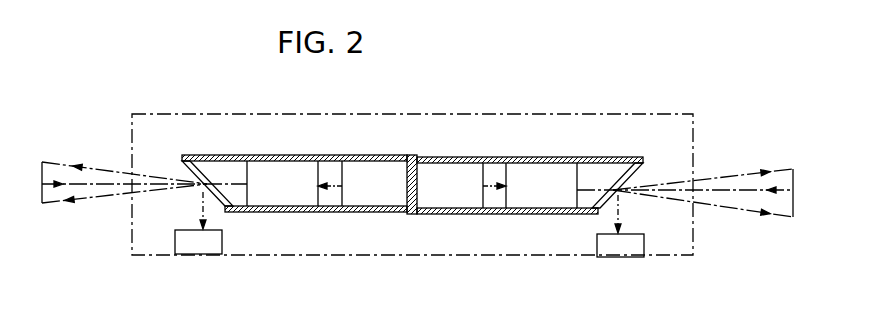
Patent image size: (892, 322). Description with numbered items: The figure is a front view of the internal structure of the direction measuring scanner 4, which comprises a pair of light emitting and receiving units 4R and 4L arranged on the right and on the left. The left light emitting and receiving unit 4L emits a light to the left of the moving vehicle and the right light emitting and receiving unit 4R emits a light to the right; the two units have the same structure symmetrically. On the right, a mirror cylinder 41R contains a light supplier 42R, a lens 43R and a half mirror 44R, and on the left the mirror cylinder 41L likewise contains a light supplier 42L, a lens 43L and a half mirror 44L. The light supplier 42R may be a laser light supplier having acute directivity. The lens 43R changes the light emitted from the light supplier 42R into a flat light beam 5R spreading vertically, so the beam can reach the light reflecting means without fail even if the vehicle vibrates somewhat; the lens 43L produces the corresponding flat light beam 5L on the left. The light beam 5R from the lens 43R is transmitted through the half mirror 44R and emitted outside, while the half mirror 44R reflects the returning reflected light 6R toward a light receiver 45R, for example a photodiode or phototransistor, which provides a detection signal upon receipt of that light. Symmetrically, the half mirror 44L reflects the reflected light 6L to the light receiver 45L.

The direction measuring scanner 4 is at (542, 115).
The light emitting and receiving unit 4L is at (356, 148).
The light emitting and receiving unit 4R is at (473, 150).
The mirror cylinder 41L is at (328, 155).
The mirror cylinder 41R is at (510, 157).
The light supplier 42L is at (381, 198).
The light supplier 42R is at (458, 198).
The lens 43L is at (290, 212).
The lens 43R is at (543, 215).
The half mirror 44L is at (187, 167).
The half mirror 44R is at (643, 166).
The light receiver 45L is at (207, 255).
The light receiver 45R is at (627, 258).
The light beam 5L is at (101, 166).
The light beam 5R is at (703, 170).
The reflected light 6L is at (108, 194).
The reflected light 6R is at (750, 194).